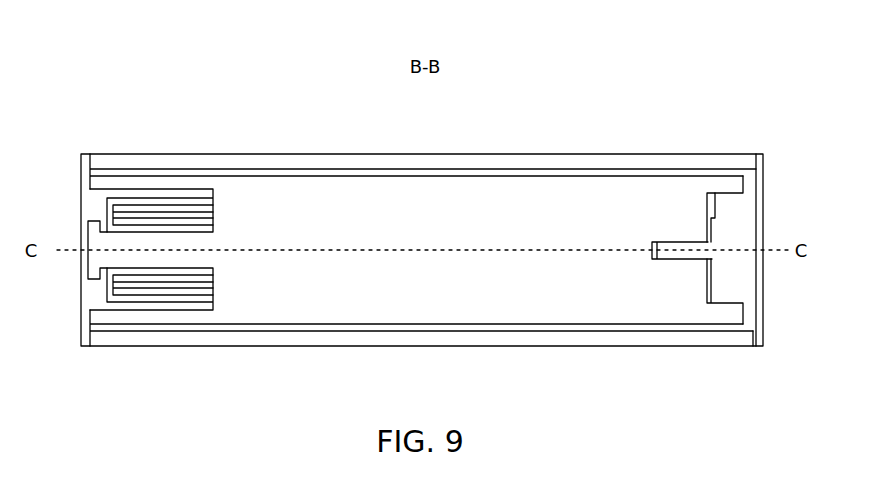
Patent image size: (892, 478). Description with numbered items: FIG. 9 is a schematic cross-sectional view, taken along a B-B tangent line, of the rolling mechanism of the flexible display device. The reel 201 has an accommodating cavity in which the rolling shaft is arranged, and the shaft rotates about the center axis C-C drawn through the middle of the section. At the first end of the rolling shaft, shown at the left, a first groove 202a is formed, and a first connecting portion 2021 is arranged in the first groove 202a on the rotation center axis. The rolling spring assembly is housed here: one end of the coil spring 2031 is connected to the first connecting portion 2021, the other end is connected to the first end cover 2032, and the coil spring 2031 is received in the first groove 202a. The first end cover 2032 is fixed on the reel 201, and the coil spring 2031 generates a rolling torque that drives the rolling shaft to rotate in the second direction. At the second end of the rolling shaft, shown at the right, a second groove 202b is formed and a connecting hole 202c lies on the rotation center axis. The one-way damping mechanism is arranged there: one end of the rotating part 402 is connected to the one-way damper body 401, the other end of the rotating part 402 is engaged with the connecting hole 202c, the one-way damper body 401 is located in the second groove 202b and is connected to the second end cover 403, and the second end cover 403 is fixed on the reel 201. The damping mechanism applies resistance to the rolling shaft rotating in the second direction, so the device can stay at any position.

The reel 201 is at (258, 162).
The first groove 202a is at (113, 212).
The first connecting portion 2021 is at (173, 240).
The coil spring 2031 is at (188, 280).
The first end cover 2032 is at (81, 292).
The second groove 202b is at (708, 193).
The connecting hole 202c is at (652, 259).
The one-way damper body 401 is at (740, 213).
The rotating part 402 is at (661, 242).
The second end cover 403 is at (752, 311).